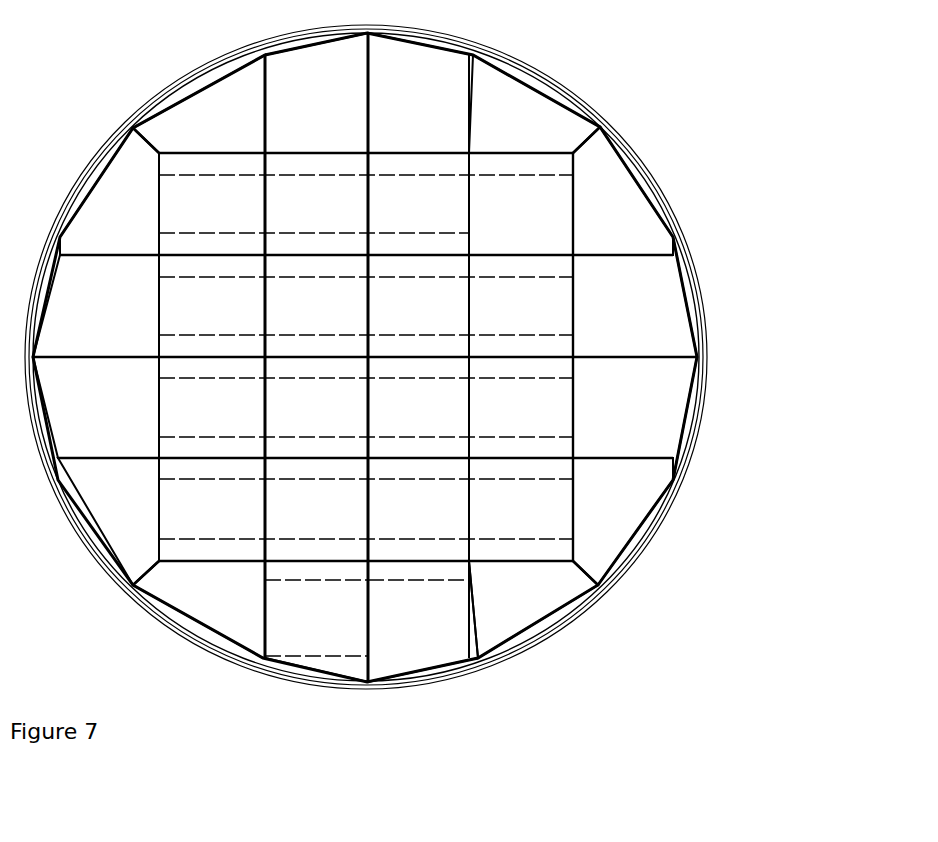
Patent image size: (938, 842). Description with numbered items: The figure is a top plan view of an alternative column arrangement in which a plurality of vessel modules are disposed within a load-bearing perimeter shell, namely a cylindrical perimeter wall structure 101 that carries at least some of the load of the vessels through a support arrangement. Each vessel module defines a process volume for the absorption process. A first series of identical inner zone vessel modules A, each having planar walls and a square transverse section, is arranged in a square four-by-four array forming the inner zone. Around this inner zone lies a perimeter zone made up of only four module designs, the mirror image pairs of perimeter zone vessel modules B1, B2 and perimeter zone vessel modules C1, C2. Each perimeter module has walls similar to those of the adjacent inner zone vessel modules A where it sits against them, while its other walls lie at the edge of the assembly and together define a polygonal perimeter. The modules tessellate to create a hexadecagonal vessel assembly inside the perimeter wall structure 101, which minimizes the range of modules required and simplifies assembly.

The perimeter wall structure 101 is at (578, 620).
The inner zone vessel module A is at (366, 357).
The perimeter zone vessel module of type B1 is at (366, 356).
The perimeter zone vessel module of type B2 is at (365, 356).
The perimeter zone vessel module of type C1 is at (365, 357).
The perimeter zone vessel module of type C2 is at (365, 357).